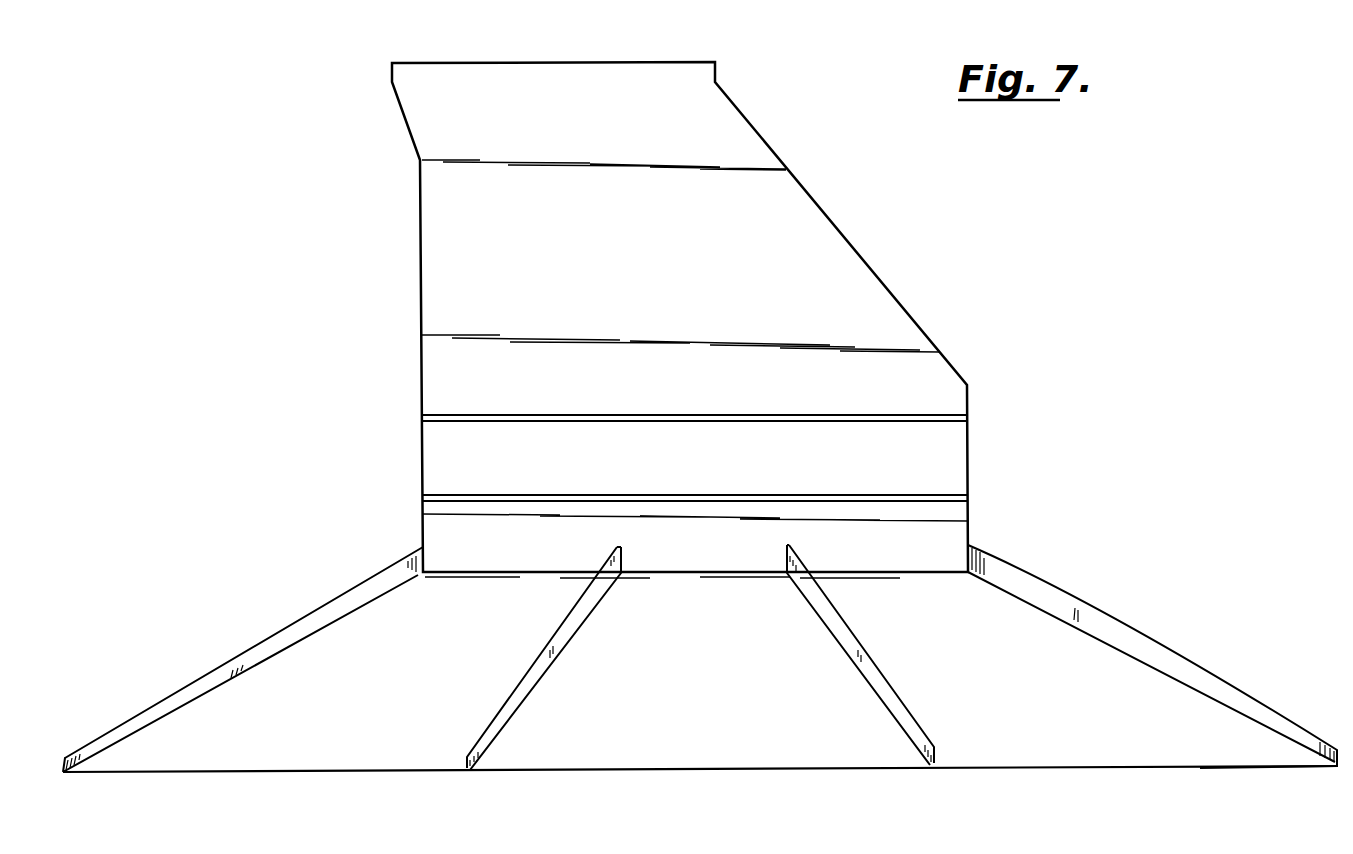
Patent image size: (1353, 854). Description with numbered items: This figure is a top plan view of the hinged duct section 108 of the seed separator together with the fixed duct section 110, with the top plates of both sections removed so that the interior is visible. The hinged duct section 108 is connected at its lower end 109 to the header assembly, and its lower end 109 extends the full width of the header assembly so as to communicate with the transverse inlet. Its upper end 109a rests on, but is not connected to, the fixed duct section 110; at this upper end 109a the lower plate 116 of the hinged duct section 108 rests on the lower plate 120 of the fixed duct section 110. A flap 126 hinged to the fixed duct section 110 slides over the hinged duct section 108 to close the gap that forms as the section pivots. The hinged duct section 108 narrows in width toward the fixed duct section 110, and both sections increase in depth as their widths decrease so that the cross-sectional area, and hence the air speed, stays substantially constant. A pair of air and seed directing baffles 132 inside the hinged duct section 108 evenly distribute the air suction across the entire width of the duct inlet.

The fixed duct section 110 is at (853, 266).
The lower plate of the fixed duct section 120 is at (606, 260).
The flap 126 is at (953, 453).
The upper end of the hinged duct section 109a is at (968, 525).
The lower plate of the hinged duct section 116 is at (708, 674).
The hinged duct section 108 is at (1120, 637).
The lower end of the hinged duct section 109 is at (1298, 733).
The air and seed directing baffles 132 is at (578, 622).